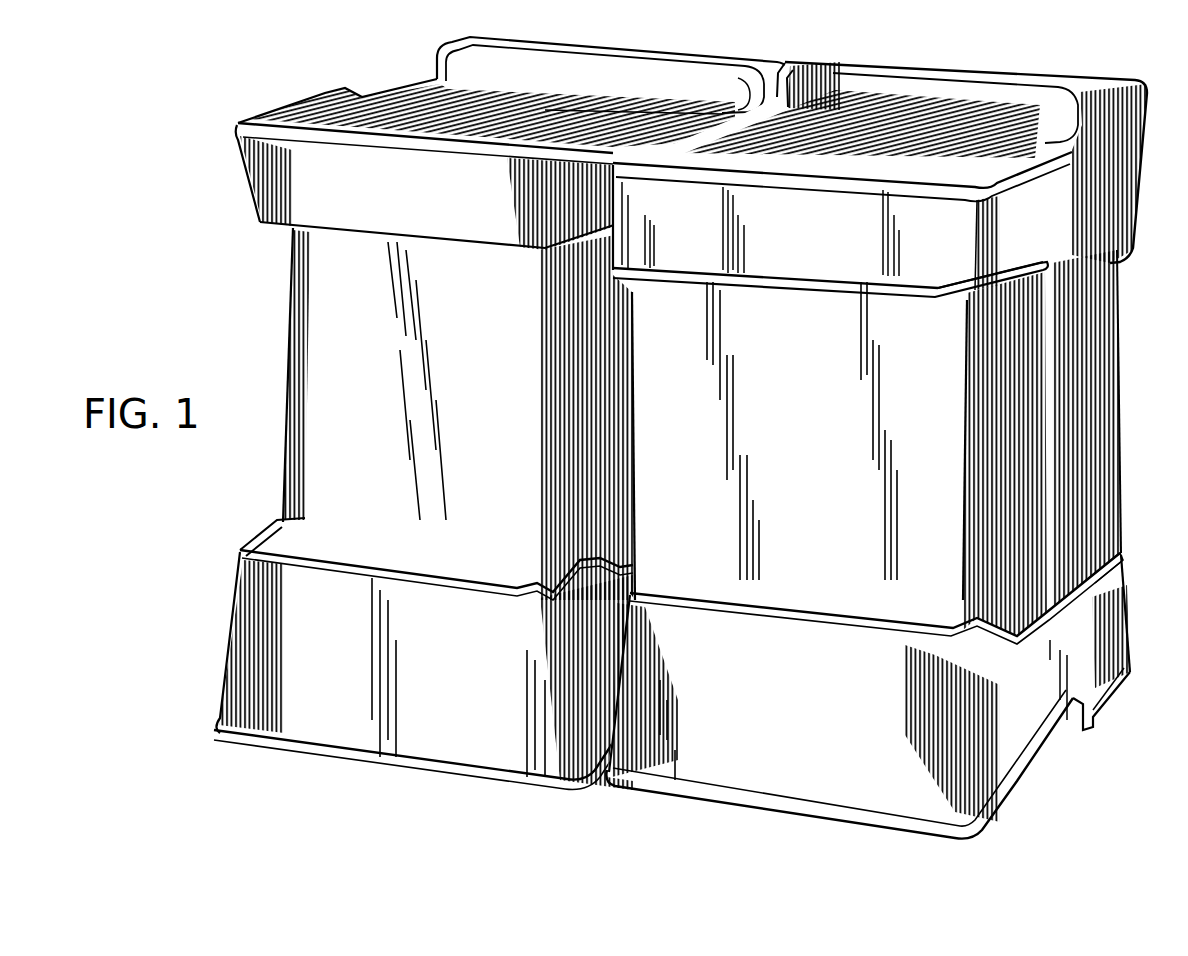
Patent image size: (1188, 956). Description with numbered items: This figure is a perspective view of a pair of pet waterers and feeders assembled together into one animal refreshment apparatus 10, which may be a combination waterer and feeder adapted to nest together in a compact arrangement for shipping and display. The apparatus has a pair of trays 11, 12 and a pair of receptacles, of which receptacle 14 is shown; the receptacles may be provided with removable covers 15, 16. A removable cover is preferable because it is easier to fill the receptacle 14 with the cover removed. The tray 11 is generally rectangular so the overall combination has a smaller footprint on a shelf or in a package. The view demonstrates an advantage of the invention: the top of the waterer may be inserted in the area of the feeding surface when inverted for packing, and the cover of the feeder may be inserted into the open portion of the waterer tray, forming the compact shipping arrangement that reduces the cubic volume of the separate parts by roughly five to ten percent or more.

The animal refreshment apparatus 10 is at (833, 450).
The tray 11 is at (830, 727).
The tray 12 is at (833, 248).
The receptacle 14 is at (1103, 479).
The removable cover 15 is at (804, 290).
The removable cover 16 is at (1120, 543).